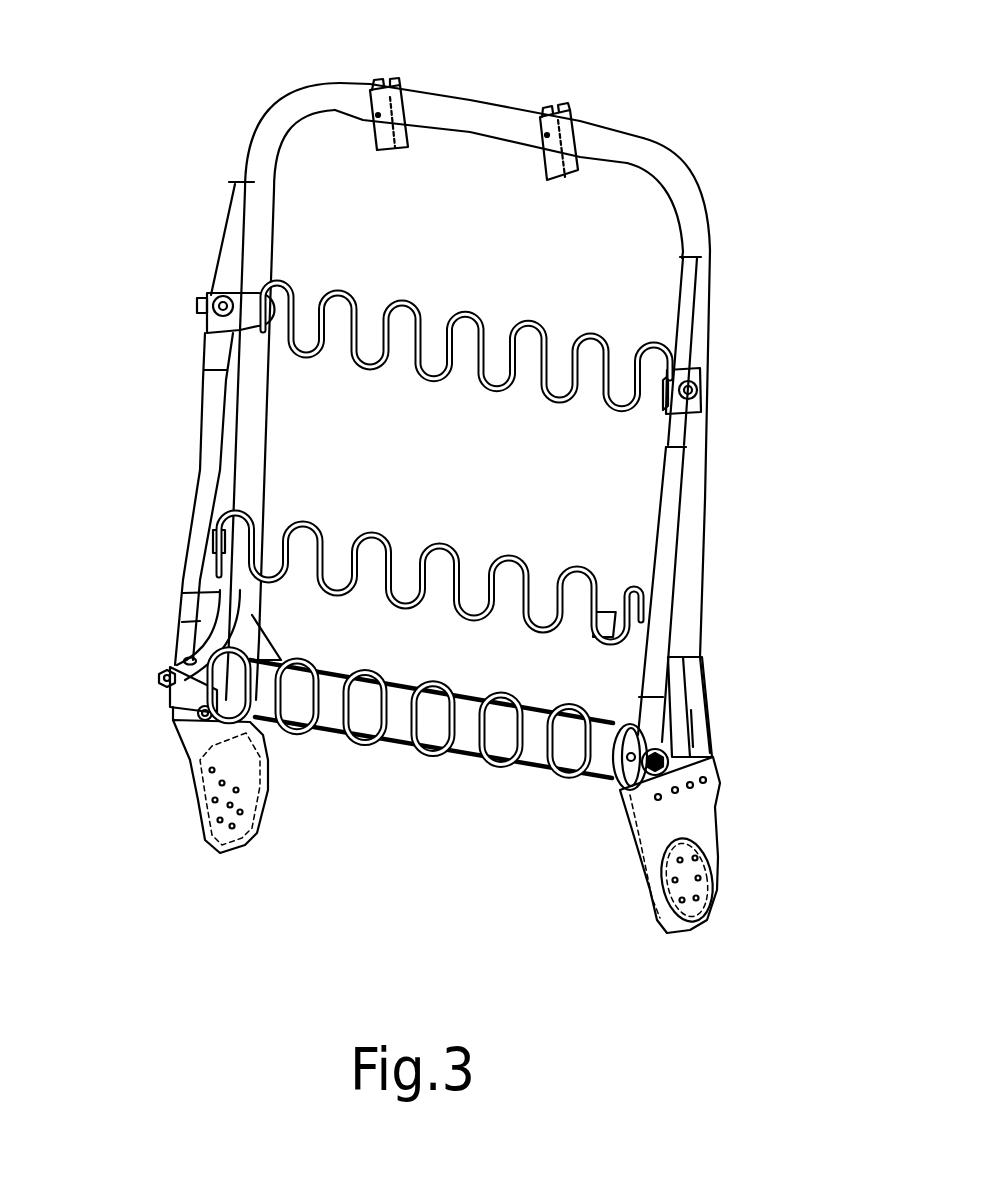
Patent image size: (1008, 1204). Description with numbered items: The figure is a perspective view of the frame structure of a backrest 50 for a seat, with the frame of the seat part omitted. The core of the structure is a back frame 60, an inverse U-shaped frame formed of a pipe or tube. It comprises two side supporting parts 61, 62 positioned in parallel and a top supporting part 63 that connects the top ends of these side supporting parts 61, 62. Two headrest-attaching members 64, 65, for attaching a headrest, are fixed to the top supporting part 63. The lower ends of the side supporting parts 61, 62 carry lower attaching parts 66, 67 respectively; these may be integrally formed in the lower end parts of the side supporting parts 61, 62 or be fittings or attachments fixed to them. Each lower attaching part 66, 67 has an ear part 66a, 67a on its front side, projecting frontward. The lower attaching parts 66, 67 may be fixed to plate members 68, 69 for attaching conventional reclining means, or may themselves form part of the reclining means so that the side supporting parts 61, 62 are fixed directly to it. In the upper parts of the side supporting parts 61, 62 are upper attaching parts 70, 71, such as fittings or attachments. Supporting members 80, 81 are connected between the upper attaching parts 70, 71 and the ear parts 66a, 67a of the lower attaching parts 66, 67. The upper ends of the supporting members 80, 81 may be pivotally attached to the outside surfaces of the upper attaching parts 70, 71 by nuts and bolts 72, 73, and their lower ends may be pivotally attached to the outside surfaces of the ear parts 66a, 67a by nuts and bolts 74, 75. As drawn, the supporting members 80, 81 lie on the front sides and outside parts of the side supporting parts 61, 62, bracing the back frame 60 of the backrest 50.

The backrest 50 is at (813, 283).
The back frame 60 is at (683, 163).
The side supporting part 61 is at (688, 573).
The side supporting part 62 is at (258, 447).
The top supporting part 63 is at (458, 107).
The headrest-attaching member 64 is at (570, 113).
The headrest-attaching member 65 is at (407, 98).
The lower attaching part 66 is at (697, 697).
The ear part 66a is at (623, 787).
The lower attaching part 67 is at (222, 608).
The ear part 67a is at (187, 660).
The plate member 68 is at (705, 817).
The plate member 69 is at (183, 803).
The upper attaching part 70 is at (700, 333).
The upper attaching part 71 is at (228, 240).
The nut and bolt 72 is at (703, 392).
The nut and bolt 73 is at (198, 302).
The nut and bolt 74 is at (698, 757).
The nut and bolt 75 is at (159, 678).
The supporting member 80 is at (660, 520).
The supporting member 81 is at (200, 453).